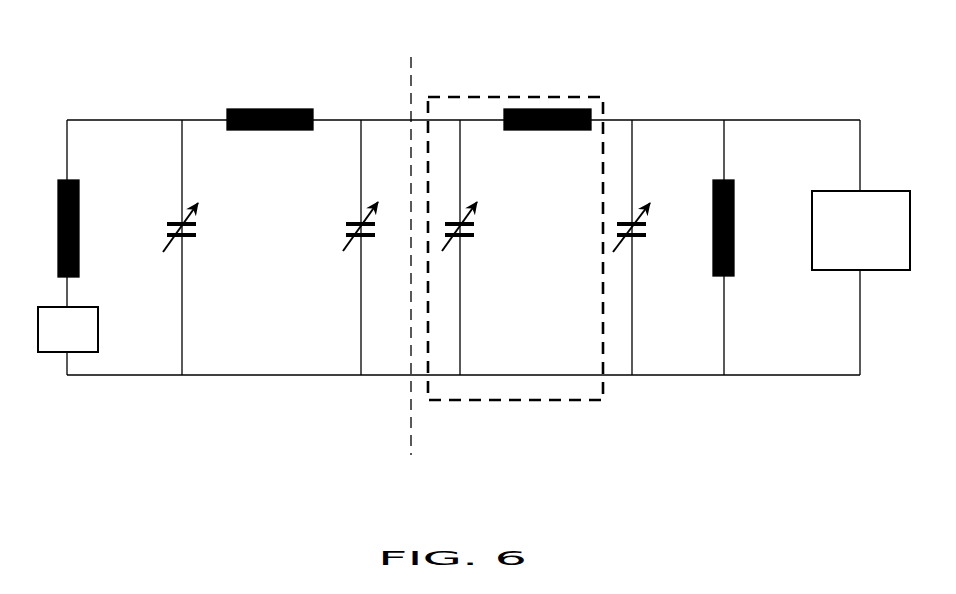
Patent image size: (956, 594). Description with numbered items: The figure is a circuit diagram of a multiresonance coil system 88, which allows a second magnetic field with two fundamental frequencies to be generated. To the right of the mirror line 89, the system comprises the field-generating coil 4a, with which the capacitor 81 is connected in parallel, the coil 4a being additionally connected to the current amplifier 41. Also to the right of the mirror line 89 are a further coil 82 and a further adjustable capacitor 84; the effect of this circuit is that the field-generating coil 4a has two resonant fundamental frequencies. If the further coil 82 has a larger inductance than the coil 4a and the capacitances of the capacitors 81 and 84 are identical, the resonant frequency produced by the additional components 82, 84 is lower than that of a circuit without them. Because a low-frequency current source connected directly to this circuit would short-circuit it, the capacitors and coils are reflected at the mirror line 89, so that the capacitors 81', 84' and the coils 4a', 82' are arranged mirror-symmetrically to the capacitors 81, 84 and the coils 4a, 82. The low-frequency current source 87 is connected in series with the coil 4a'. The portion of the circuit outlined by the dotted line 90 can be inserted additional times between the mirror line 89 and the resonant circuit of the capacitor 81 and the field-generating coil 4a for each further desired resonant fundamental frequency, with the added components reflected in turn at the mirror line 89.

The mirrored coil 4a' is at (105, 228).
The low-frequency current source 87 is at (98, 330).
The mirrored capacitor 81' is at (204, 247).
The mirrored further coil 82' is at (270, 87).
The mirrored adjustable capacitor 84' is at (372, 247).
The mirror line 89 is at (410, 80).
The dotted line 90 is at (515, 97).
The further adjustable capacitor 84 is at (480, 247).
The further coil 82 is at (547, 153).
The capacitor 81 is at (651, 247).
The field-generating coil 4a is at (755, 247).
The current amplifier 41 is at (892, 190).
The multiresonance coil system 88 is at (383, 400).